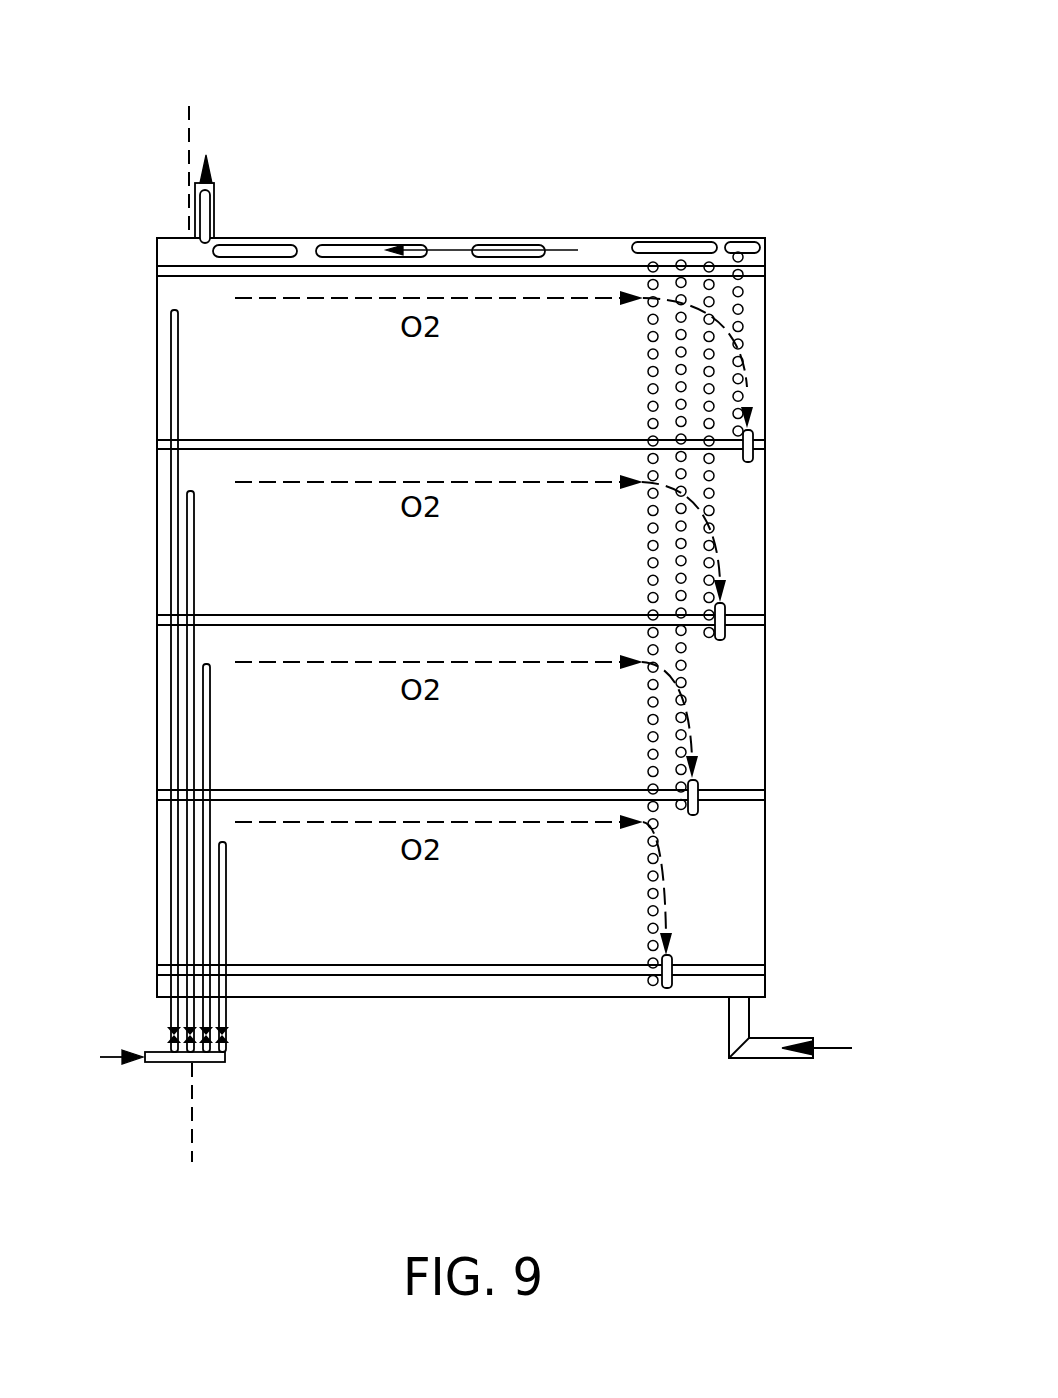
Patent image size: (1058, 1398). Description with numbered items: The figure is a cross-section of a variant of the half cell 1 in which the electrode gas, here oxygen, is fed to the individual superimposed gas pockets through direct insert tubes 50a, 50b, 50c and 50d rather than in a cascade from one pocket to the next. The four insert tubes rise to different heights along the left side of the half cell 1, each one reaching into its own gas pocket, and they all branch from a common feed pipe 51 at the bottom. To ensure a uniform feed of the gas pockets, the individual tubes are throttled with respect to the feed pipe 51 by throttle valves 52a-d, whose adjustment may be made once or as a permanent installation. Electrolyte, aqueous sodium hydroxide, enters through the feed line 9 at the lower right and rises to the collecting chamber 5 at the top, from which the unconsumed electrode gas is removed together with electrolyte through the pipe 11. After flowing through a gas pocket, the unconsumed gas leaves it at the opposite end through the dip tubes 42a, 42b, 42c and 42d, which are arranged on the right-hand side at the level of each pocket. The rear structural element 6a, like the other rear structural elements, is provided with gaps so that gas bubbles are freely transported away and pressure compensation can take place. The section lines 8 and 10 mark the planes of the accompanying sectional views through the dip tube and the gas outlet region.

The half cell 1 is at (765, 530).
The collecting chamber 5 is at (600, 247).
The rear structural element 6a is at (505, 967).
The section 8- 8 is at (507, 988).
The feed line 9 is at (765, 1060).
The section 10- 10 is at (194, 609).
The pipe 11 is at (214, 197).
The dip tube 42a is at (674, 982).
The dip tube 42b is at (700, 803).
The dip tube 42c is at (727, 636).
The dip tube 42d is at (750, 456).
The insert tube 50a is at (220, 913).
The insert tube 50b is at (207, 728).
The insert tube 50c is at (190, 542).
The insert tube 50d is at (174, 387).
The feed pipe 51 is at (170, 1063).
The throttle valves 52a-d is at (228, 1033).